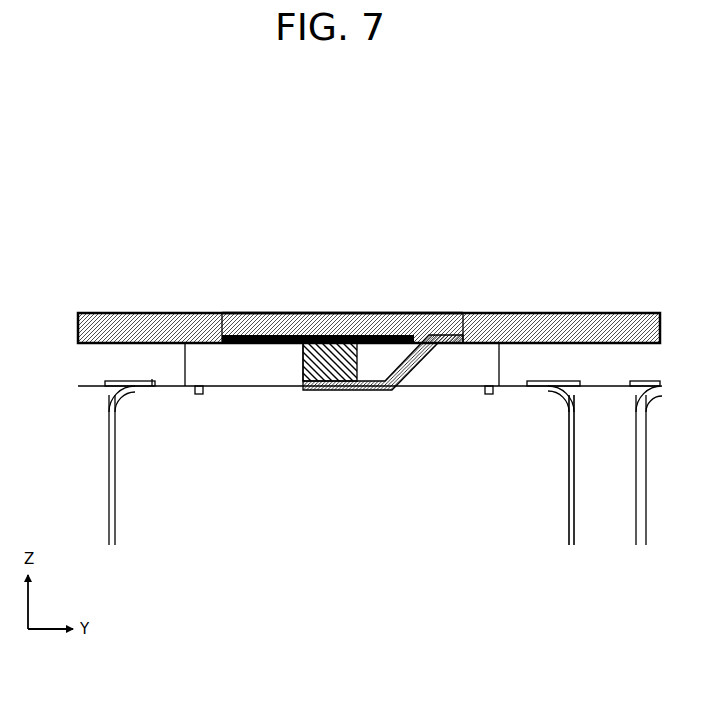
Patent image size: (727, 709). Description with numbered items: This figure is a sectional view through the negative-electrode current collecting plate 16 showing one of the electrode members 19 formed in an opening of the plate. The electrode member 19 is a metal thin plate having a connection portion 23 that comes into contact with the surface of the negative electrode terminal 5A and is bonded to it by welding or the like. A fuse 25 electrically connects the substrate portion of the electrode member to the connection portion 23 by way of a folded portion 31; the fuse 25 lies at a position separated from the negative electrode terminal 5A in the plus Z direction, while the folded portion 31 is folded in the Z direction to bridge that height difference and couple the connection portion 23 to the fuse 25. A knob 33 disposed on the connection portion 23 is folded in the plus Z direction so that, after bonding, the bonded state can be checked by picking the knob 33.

The negative-electrode current collecting plate 16 is at (167, 332).
The electrode member 19 is at (240, 288).
The fuse 25 is at (262, 332).
The folded portion 31 is at (408, 362).
The connection portion 23 is at (318, 383).
The knob 33 is at (303, 362).
The negative electrode terminal 5A is at (403, 388).